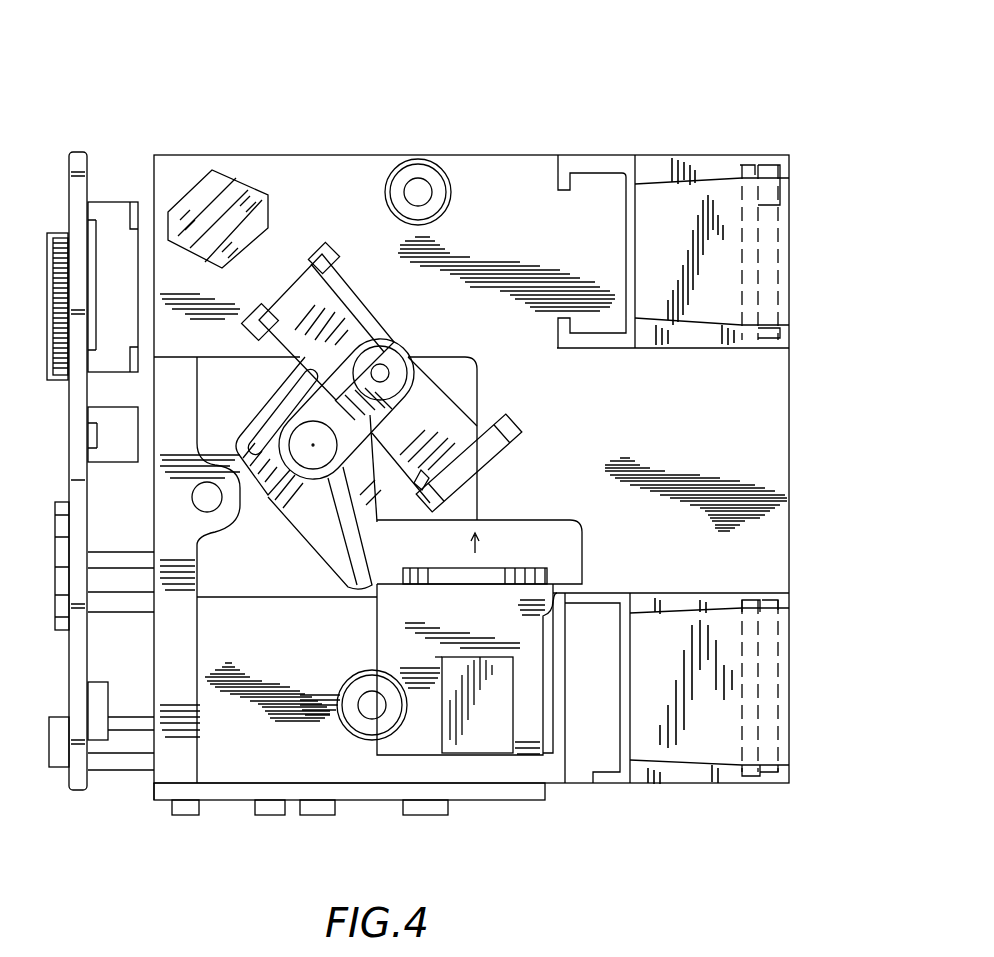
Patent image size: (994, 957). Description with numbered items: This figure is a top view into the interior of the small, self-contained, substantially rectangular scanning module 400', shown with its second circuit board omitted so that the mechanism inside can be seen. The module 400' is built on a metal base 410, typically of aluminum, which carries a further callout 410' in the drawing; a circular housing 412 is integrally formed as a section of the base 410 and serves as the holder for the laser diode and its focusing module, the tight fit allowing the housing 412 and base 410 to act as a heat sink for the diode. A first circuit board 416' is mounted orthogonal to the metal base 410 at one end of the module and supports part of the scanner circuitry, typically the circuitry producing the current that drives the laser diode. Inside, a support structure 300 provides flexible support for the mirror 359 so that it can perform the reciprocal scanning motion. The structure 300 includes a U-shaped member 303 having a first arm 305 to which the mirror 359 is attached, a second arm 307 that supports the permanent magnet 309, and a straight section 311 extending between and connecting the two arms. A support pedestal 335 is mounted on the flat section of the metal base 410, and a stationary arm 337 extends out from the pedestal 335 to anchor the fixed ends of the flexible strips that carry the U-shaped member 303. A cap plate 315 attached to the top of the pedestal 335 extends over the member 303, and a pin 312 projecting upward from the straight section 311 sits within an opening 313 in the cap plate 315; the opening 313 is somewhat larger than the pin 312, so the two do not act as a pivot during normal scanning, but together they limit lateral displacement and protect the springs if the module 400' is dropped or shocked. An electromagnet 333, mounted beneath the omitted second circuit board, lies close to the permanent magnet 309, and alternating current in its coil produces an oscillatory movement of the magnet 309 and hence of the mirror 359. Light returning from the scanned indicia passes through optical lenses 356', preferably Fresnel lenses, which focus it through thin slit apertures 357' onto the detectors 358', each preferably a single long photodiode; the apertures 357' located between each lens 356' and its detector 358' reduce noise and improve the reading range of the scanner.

The scanning module 400' is at (471, 415).
The first circuit board 416' is at (100, 454).
The electromagnet 333 is at (243, 185).
The metal base 410 is at (425, 171).
The detectors 358' is at (716, 476).
The optical lenses 356' is at (805, 470).
The apertures 357' is at (699, 469).
The permanent magnet 309 is at (305, 262).
The U-shaped member 303 is at (338, 304).
The second arm 307 is at (250, 334).
The opening 313 is at (375, 347).
The support structure 300 is at (440, 322).
The pin 312 is at (392, 368).
The first arm 305 is at (487, 418).
The cap plate 315 is at (300, 380).
The stationary arm 337 is at (253, 425).
The mirror 359 is at (494, 440).
The straight section 311 is at (418, 458).
The support pedestal 335 is at (297, 533).
The circular housing 412 is at (385, 637).
The base plate 410' is at (127, 810).